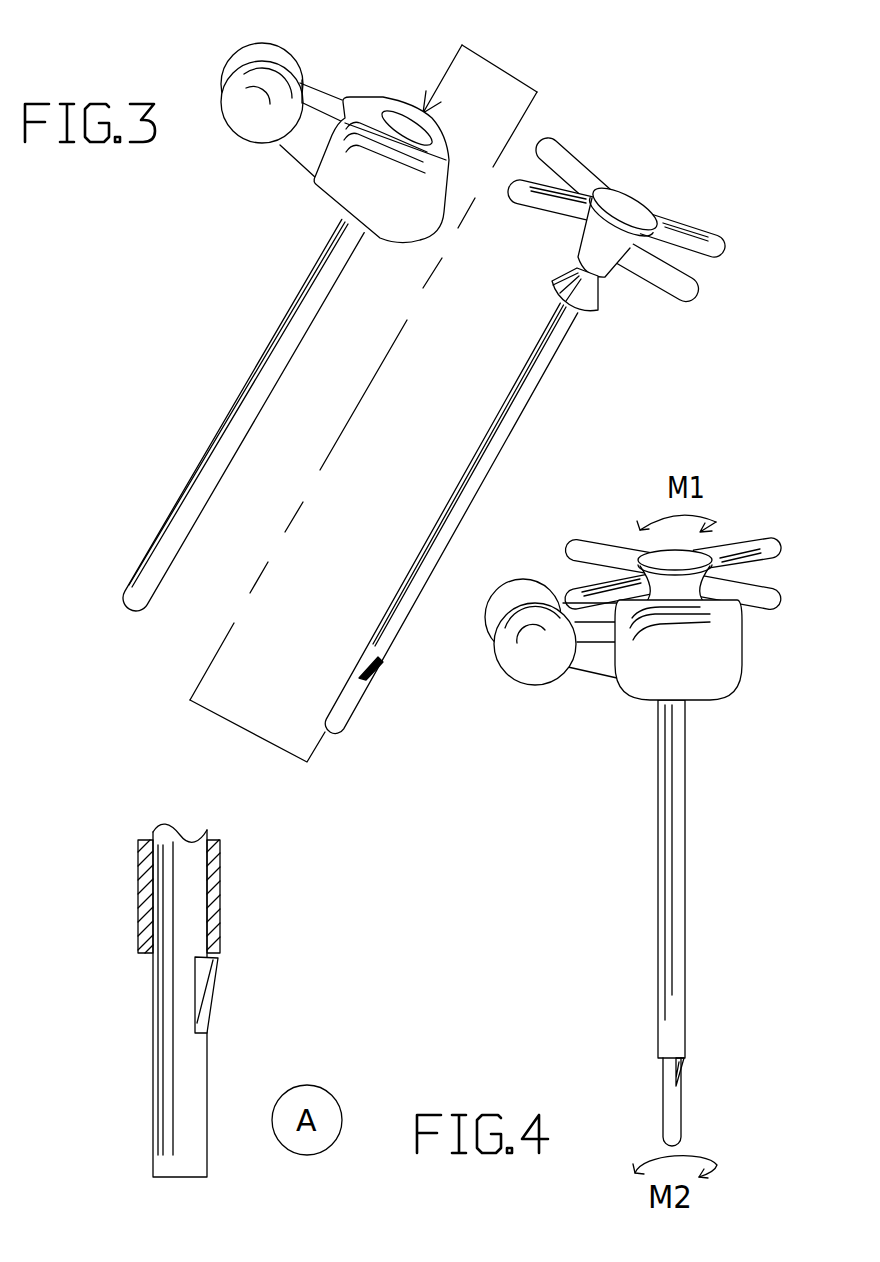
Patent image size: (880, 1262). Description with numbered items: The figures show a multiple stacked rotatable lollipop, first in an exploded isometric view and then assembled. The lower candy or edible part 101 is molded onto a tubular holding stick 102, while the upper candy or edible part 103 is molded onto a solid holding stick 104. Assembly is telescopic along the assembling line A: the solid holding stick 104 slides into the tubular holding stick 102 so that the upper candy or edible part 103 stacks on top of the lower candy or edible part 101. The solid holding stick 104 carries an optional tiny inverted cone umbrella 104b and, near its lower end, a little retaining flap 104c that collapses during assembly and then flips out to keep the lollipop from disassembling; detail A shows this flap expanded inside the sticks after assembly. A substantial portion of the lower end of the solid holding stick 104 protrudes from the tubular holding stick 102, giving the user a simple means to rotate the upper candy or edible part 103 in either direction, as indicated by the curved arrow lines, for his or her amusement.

In FIG. 3, the lower candy or edible part 101 is at (293, 153).
In FIG. 4, the lower candy or edible part 101 is at (612, 677).
In FIG. 3, the tubular holding stick 102 is at (282, 296).
In FIG. 4, the tubular holding stick 102 is at (657, 883).
In FIG. 3, the upper candy or edible part 103 is at (662, 200).
In FIG. 4, the upper candy or edible part 103 is at (737, 547).
In FIG. 3, the solid holding stick 104 is at (537, 347).
In FIG. 4, the solid holding stick 104 is at (657, 1092).
In FIG. 3, the inverted cone umbrella 104b is at (600, 290).
In FIG. 3, the retaining flap 104c is at (377, 678).
In FIG. 4, the retaining flap 104c is at (690, 1068).